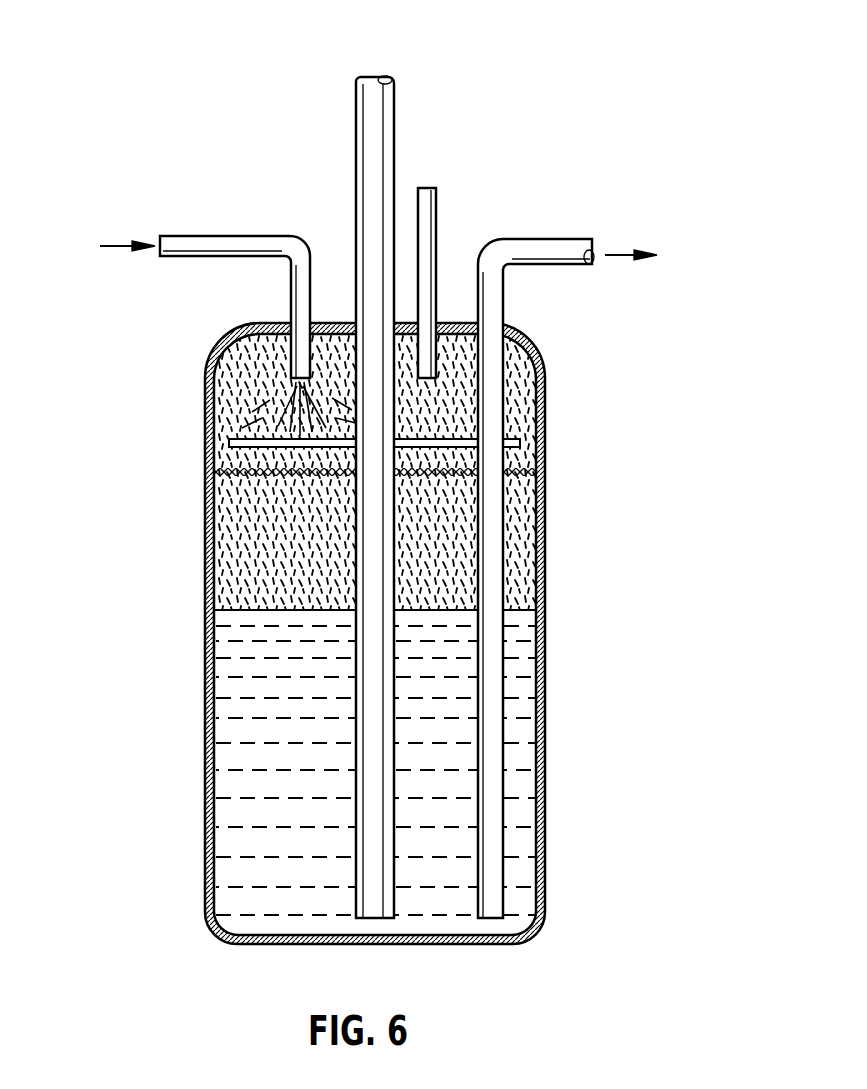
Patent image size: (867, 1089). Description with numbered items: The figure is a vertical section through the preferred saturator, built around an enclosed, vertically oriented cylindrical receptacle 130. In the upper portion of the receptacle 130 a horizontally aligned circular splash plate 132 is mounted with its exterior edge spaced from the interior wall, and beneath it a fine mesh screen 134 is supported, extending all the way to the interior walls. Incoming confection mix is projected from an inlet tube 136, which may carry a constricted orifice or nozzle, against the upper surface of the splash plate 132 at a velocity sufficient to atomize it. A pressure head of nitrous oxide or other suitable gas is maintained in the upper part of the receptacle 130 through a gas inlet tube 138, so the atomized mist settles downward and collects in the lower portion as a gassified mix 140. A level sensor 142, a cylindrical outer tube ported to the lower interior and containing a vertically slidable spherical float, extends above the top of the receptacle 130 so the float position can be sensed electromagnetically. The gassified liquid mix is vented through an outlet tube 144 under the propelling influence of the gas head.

The receptacle 130 is at (543, 667).
The splash plate 132 is at (548, 420).
The fine mesh screen 134 is at (543, 497).
The inlet tube 136 is at (300, 293).
The gas inlet tube 138 is at (425, 258).
The gassified mix 140 is at (518, 807).
The level sensor 142 is at (373, 143).
The outlet tube 144 is at (542, 257).